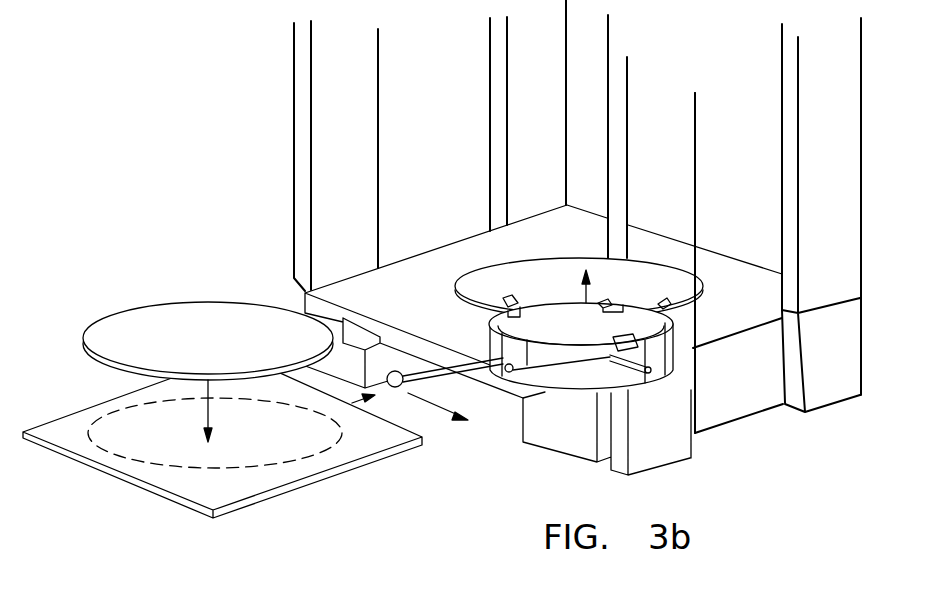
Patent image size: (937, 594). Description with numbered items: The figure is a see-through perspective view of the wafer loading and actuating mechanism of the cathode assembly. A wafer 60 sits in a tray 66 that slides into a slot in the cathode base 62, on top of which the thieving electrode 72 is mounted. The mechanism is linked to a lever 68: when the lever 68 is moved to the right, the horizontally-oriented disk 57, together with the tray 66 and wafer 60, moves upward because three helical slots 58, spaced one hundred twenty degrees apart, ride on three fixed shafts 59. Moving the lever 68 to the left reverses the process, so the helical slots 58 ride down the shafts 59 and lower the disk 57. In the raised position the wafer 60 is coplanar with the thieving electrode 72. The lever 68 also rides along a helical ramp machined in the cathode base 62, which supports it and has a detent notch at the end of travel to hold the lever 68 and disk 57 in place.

The horizontally-oriented disk 57 is at (556, 300).
The helical slots 58 is at (553, 373).
The fixed shafts 59 is at (639, 388).
The wafer 60 is at (153, 320).
The cathode base 62 is at (735, 395).
The tray 66 is at (232, 490).
The lever 68 is at (397, 388).
The thieving electrode 72 is at (433, 265).